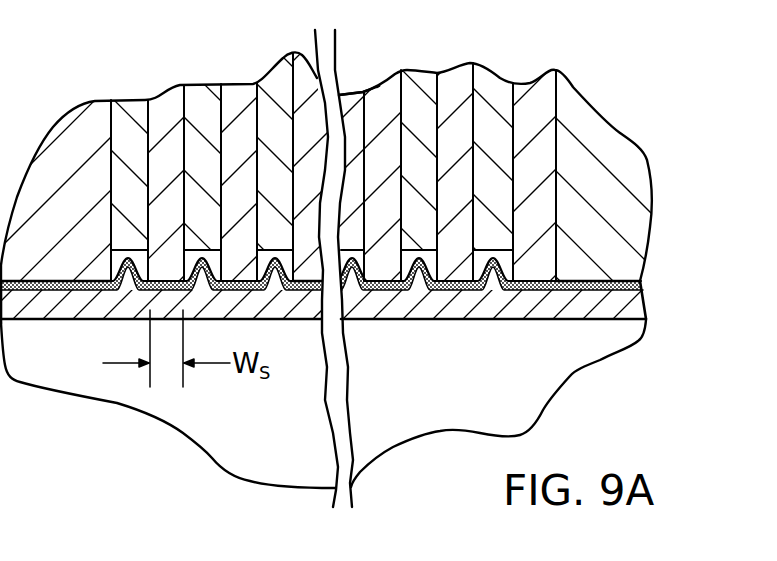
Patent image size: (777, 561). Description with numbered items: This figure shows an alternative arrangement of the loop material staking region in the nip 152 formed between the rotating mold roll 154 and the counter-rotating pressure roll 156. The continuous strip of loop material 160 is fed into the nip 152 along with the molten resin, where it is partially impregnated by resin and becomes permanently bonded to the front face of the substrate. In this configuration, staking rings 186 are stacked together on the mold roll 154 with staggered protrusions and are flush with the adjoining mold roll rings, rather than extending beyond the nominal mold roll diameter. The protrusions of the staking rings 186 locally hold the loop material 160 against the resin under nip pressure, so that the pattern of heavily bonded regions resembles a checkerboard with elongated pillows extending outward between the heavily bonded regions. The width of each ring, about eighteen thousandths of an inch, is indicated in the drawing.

The nip 152 is at (643, 291).
The mold roll 154 is at (620, 137).
The pressure roll 156 is at (522, 381).
The loop material 160 is at (514, 272).
The staking rings 186 is at (156, 117).